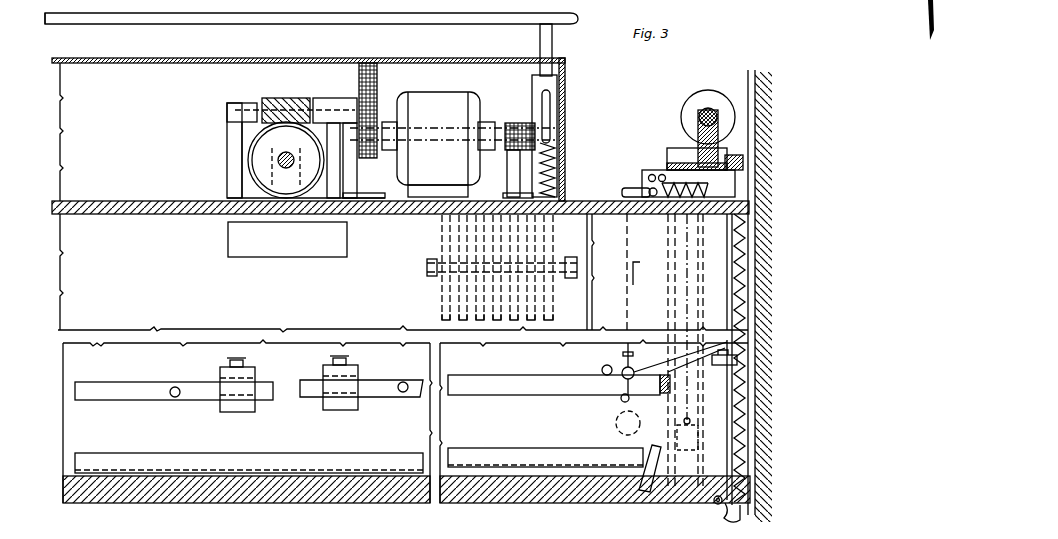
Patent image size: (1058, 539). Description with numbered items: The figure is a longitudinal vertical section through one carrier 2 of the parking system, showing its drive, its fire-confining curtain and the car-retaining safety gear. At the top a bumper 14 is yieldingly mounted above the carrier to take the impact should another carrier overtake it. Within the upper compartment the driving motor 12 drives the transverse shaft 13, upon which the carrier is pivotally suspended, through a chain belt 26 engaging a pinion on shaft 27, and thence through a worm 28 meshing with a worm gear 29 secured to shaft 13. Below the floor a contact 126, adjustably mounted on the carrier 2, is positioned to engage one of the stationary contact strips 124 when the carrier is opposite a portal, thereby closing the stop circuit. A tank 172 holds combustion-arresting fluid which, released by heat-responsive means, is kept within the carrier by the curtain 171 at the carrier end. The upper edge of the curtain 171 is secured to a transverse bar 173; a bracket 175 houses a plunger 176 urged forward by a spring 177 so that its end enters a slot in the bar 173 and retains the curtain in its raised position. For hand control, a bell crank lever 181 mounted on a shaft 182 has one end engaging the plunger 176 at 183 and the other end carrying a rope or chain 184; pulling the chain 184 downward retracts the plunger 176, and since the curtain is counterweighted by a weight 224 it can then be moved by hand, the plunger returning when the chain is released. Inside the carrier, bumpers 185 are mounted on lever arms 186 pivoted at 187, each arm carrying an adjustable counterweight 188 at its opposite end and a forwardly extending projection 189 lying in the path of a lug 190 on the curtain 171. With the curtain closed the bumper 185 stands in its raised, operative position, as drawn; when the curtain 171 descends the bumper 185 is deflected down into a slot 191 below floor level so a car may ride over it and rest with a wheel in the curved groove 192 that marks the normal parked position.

The carrier 2 is at (326, 493).
The driving motor 12 is at (460, 80).
The shaft 13 is at (277, 156).
The bumper 14 is at (119, 25).
The chain belt 26 is at (378, 78).
The shaft 27 is at (240, 103).
The worm 28 is at (288, 98).
The worm gear 29 is at (257, 170).
The contact strip 124 is at (443, 316).
The contact 126 is at (443, 275).
The curtain 171 is at (738, 262).
The tank 172 is at (300, 250).
The transverse bar 173 is at (738, 163).
The bracket 175 is at (698, 147).
The plunger 176 is at (715, 185).
The spring 177 is at (688, 222).
The bell crank lever 181 is at (636, 188).
The shaft 182 is at (650, 176).
The engagement point 183 is at (661, 175).
The rope or chain 184 is at (644, 272).
The bumper 185 is at (663, 395).
The lever arm 186 is at (528, 388).
The pivot 187 is at (404, 382).
The counterweight 188 is at (343, 410).
The projection 189 is at (730, 345).
The lug 190 is at (720, 366).
The slot 191 is at (661, 437).
The curved groove 192 is at (495, 487).
The weight 224 is at (690, 507).